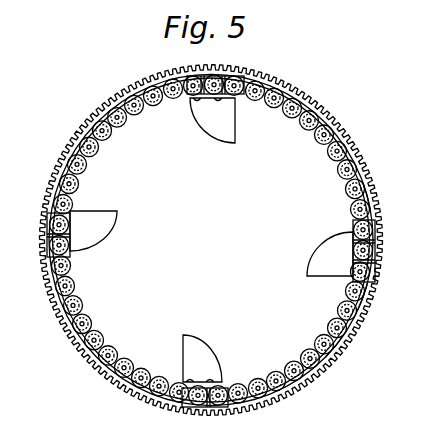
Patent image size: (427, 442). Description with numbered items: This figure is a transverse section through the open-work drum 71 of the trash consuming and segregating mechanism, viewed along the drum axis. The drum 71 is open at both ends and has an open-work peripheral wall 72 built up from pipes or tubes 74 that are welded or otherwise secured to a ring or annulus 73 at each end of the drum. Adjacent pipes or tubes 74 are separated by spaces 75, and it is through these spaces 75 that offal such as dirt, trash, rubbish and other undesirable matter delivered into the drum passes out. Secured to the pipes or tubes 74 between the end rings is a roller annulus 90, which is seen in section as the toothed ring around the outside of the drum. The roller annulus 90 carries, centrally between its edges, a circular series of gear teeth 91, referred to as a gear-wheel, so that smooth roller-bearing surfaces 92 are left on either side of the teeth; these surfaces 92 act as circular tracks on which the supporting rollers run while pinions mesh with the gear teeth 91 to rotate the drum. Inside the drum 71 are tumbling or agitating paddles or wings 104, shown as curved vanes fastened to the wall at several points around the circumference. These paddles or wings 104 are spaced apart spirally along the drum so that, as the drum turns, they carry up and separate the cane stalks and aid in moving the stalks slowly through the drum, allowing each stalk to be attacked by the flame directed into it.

The drum 71 is at (211, 239).
The open-work peripheral wall 72 is at (362, 293).
The ring or annulus 73 is at (330, 338).
The pipes or tubes 74 is at (211, 240).
The spaces 75 is at (211, 240).
The roller annulus 90 is at (212, 240).
The gear teeth 91 is at (207, 240).
The roller-bearing surfaces 92 is at (369, 196).
The paddles or wings 104 is at (214, 127).